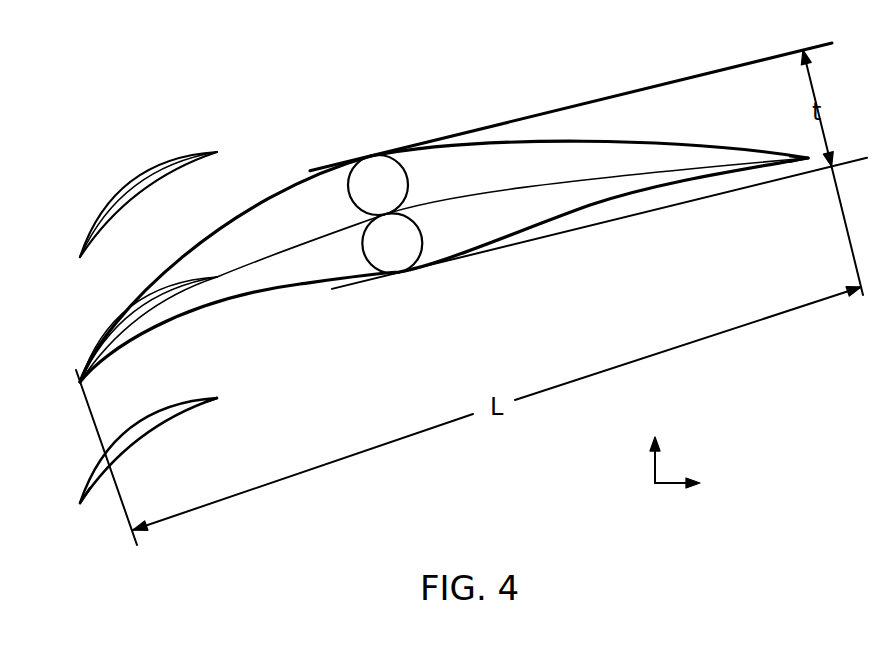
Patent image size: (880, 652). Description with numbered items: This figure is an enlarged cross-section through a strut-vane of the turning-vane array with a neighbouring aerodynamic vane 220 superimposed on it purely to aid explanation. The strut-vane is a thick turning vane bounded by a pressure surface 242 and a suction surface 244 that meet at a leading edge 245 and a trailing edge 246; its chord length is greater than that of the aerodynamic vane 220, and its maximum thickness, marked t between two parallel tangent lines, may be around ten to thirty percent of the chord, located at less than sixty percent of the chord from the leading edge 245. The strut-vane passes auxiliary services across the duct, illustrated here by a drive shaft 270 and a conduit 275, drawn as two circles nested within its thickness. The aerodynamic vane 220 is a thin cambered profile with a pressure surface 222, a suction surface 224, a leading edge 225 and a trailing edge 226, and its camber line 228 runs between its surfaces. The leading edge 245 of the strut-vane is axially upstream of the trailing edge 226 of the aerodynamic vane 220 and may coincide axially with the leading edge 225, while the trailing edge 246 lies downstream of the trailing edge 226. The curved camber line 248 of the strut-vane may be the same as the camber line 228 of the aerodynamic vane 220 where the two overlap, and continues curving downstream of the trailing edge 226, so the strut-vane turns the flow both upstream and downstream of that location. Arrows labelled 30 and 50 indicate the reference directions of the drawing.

The aerodynamic vane 220 is at (157, 437).
The pressure surface of aerodynamic vane 222 is at (163, 183).
The suction surface of aerodynamic vane 224 is at (170, 162).
The leading edge of aerodynamic vane 225 is at (80, 505).
The trailing edge of aerodynamic vane 226 is at (215, 398).
The camber line of aerodynamic vane 228 is at (138, 188).
The pressure surface of strut-vane 242 is at (300, 284).
The suction surface of strut-vane 244 is at (673, 147).
The leading edge of strut-vane 245 is at (80, 378).
The trailing edge of strut-vane 246 is at (808, 158).
The camber line of strut-vane 248 is at (290, 246).
The drive shaft 270 is at (378, 187).
The conduit 275 is at (390, 243).
The axial direction 30 is at (697, 485).
The radial direction 50 is at (657, 444).